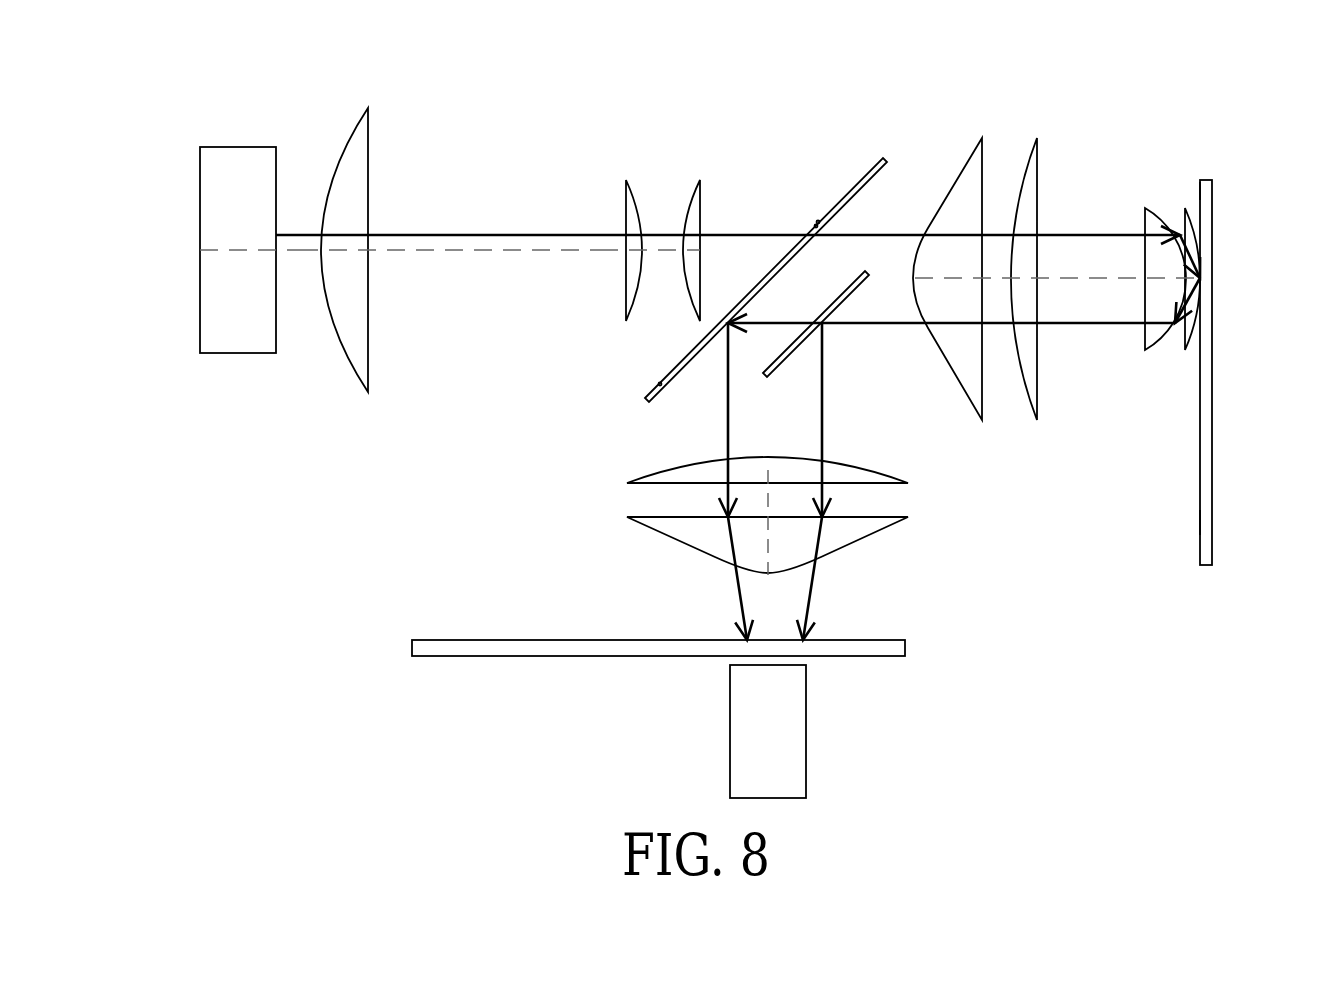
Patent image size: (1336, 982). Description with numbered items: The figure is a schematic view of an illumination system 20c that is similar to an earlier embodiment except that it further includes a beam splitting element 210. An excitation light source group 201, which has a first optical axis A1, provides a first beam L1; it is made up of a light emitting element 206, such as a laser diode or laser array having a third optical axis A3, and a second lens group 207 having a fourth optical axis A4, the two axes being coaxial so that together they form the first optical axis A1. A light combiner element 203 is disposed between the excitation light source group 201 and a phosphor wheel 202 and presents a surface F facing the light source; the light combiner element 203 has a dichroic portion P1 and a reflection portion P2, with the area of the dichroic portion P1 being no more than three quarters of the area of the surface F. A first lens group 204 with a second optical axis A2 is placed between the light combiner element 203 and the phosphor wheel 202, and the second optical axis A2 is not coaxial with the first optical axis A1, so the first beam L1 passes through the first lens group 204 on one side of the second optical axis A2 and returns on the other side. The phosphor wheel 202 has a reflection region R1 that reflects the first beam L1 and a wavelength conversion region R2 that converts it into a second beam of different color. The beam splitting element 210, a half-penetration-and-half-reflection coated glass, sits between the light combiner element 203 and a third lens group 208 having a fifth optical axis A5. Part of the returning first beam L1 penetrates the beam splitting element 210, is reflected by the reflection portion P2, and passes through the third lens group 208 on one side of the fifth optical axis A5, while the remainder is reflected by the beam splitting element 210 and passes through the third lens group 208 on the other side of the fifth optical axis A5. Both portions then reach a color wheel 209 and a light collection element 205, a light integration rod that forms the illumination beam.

The illumination system 20c is at (152, 87).
The excitation light source group 201 is at (537, 48).
The light emitting element 206 is at (248, 155).
The second lens group 207 is at (700, 100).
The light combiner element 203 is at (840, 196).
The beam splitting element 210 is at (856, 292).
The first lens group 204 is at (1185, 112).
The phosphor wheel 202 is at (1208, 542).
The third lens group 208 is at (933, 457).
The color wheel 209 is at (448, 640).
The light collection element 205 is at (782, 735).
The surface F is at (811, 217).
The dichroic portion P1 is at (815, 212).
The reflection portion P2 is at (658, 380).
The first beam L1 is at (536, 232).
The first optical axis A1 is at (220, 440).
The second optical axis A2 is at (1080, 280).
The third optical axis A3 is at (250, 252).
The fourth optical axis A4 is at (475, 252).
The fifth optical axis A5 is at (768, 470).
The reflection region R1 is at (1189, 190).
The wavelength conversion region R2 is at (1198, 521).